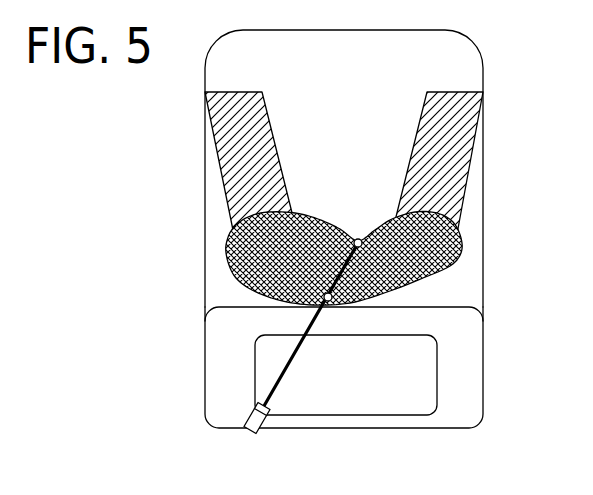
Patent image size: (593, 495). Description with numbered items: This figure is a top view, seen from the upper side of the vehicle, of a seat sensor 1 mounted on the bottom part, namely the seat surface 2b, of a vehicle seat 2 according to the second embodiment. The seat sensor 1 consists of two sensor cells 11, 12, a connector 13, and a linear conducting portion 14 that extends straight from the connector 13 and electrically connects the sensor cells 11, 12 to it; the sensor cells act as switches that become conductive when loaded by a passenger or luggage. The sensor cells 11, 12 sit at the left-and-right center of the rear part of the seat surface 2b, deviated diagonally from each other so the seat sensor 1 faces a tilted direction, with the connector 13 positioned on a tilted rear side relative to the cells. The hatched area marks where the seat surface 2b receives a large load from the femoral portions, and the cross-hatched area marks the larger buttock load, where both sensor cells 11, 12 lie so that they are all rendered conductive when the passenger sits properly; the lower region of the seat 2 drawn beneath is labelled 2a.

The seat sensor 1 is at (308, 282).
The seat 2 is at (387, 229).
The lower housing portion 2a is at (475, 378).
The seat surface 2b is at (473, 58).
The sensor cell 11 is at (353, 236).
The sensor cell 12 is at (320, 287).
The connector 13 is at (256, 408).
The conducting portion 14 is at (280, 365).